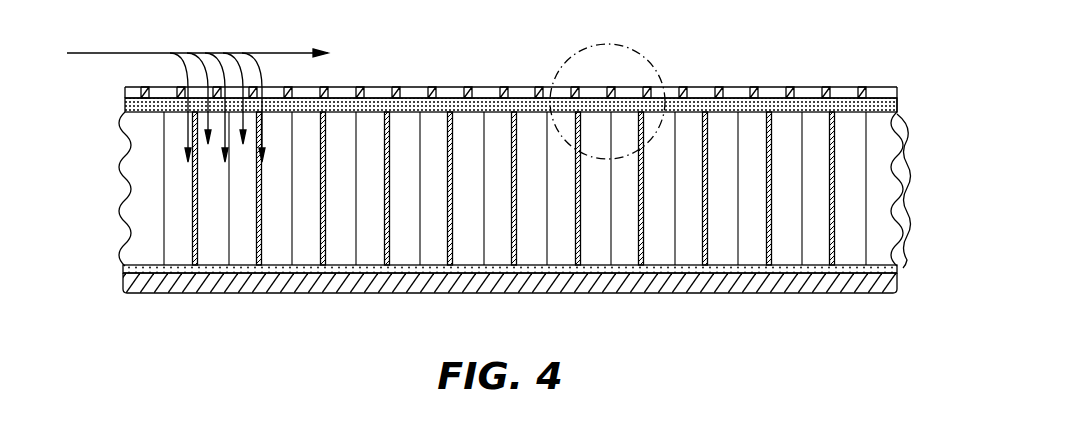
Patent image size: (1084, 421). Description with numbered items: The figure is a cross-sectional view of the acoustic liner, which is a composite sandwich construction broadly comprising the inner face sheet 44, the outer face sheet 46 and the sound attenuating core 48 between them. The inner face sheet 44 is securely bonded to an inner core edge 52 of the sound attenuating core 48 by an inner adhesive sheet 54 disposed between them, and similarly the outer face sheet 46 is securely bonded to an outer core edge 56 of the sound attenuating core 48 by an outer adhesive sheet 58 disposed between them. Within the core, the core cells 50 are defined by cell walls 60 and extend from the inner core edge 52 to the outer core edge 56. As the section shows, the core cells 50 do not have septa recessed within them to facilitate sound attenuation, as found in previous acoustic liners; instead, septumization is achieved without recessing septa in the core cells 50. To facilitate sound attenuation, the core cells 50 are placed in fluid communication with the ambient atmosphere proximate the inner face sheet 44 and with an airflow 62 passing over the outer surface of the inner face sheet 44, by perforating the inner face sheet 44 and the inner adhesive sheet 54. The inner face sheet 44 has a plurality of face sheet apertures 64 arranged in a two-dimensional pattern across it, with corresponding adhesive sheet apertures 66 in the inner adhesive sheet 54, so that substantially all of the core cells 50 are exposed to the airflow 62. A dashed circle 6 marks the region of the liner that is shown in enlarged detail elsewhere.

The detail region shown in FIG. 6 is at (637, 55).
The inner face sheet 44 is at (359, 87).
The outer face sheet 46 is at (455, 285).
The sound attenuating core 48 is at (908, 188).
The core cells 50 is at (623, 233).
The inner core edge 52 is at (843, 94).
The inner adhesive sheet 54 is at (140, 108).
The outer core edge 56 is at (806, 268).
The outer adhesive sheet 58 is at (130, 270).
The cell walls 60 is at (383, 232).
The airflow 62 is at (200, 53).
The face sheet apertures 64 is at (484, 95).
The adhesive sheet apertures 66 is at (748, 101).